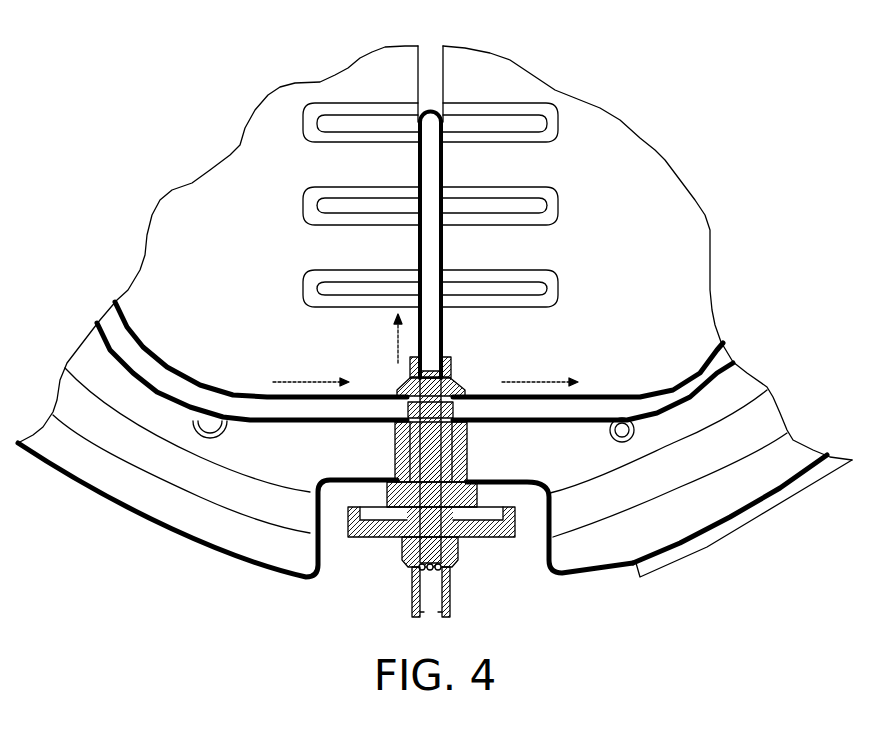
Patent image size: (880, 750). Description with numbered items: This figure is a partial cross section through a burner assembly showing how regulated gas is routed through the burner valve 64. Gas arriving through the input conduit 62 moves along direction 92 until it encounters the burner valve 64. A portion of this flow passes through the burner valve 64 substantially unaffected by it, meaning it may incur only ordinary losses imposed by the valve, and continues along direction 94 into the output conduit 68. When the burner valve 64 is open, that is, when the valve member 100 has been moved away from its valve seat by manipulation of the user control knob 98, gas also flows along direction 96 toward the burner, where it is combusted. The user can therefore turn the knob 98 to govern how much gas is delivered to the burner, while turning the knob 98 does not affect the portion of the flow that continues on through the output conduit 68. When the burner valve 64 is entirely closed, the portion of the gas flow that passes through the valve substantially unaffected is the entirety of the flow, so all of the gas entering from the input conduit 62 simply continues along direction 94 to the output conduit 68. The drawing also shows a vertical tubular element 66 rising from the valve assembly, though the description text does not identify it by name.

The input conduit 62 is at (253, 393).
The burner valve 64 is at (463, 378).
The standpipe 66 is at (445, 245).
The output conduit 68 is at (595, 393).
The direction 92 is at (304, 380).
The direction 94 is at (540, 378).
The direction 96 is at (393, 344).
The user control knob 98 is at (452, 595).
The valve member 100 is at (447, 352).